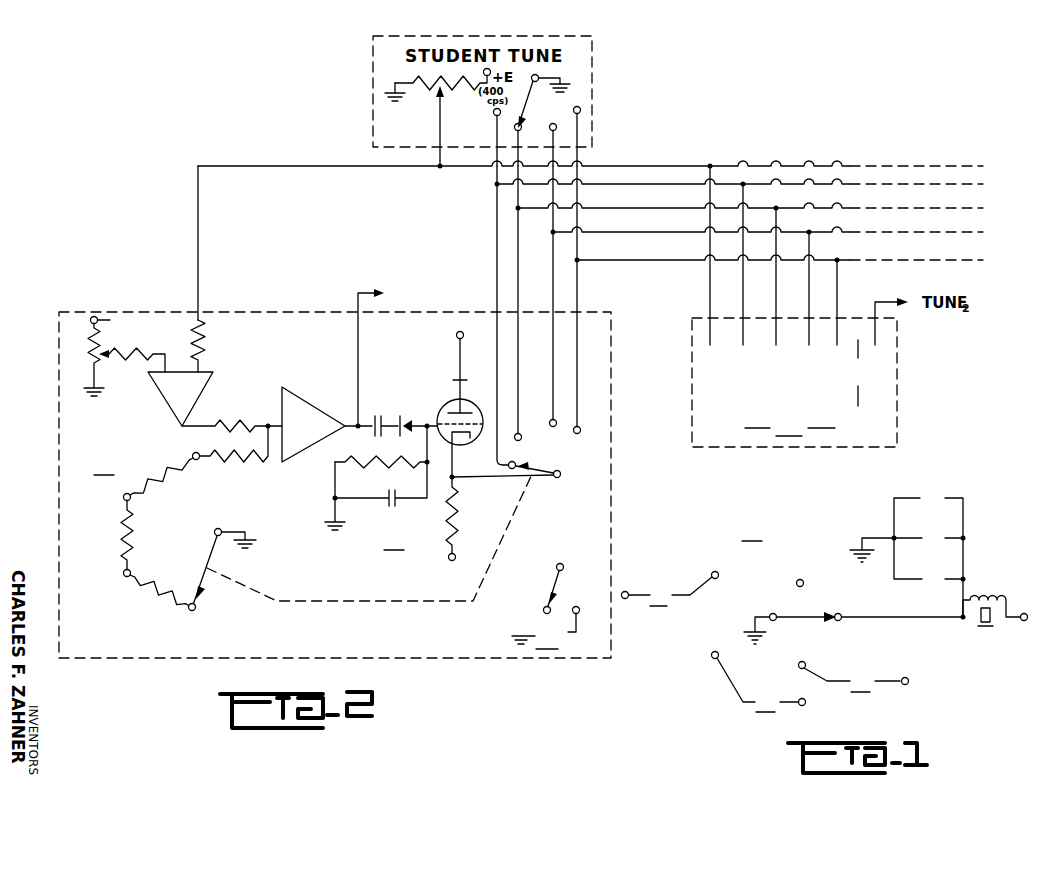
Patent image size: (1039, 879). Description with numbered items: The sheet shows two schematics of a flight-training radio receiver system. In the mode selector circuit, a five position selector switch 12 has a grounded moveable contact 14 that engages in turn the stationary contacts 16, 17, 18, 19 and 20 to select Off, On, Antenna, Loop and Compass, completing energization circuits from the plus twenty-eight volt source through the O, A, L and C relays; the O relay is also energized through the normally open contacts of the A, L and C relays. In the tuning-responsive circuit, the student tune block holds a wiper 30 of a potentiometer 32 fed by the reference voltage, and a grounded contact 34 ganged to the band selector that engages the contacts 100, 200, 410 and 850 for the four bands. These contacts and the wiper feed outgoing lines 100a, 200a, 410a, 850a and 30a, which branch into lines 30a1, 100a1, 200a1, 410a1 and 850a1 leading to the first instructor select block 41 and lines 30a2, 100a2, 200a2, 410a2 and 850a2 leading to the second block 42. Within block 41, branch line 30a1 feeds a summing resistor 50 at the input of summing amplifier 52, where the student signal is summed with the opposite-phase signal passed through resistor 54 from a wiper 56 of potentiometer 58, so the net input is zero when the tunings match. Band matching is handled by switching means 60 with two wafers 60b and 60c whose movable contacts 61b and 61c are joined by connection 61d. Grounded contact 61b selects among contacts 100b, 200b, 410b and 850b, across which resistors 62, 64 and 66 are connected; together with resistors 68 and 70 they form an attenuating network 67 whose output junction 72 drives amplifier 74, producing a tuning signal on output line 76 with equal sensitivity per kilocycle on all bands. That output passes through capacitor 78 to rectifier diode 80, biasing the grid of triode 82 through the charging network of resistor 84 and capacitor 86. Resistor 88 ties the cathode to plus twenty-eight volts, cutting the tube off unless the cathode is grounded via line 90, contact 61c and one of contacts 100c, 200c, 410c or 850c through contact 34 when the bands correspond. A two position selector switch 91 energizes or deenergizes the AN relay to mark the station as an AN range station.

In FIG. 1, the five position selector switch 12 is at (825, 608).
In FIG. 1, the moveable contact 14 is at (792, 606).
In FIG. 1, the stationary contact 16 is at (804, 584).
In FIG. 1, the stationary contact 17 is at (841, 621).
In FIG. 1, the stationary contact 18 is at (800, 671).
In FIG. 1, the stationary contact 19 is at (738, 648).
In FIG. 1, the stationary contact 20 is at (719, 575).
In FIG. 2, the wiper 30 is at (436, 96).
In FIG. 2, the potentiometer 32 is at (442, 78).
In FIG. 2, the moveable grounded contact 34 is at (530, 96).
In FIG. 2, the instructor select block 41 is at (59, 437).
In FIG. 2, the instructor select block 42 is at (898, 378).
In FIG. 2, the summing resistor 50 is at (205, 346).
In FIG. 2, the summing amplifier 52 is at (208, 386).
In FIG. 2, the resistor 54 is at (134, 348).
In FIG. 2, the wiper 56 is at (108, 361).
In FIG. 2, the potentiometer 58 is at (90, 342).
In FIG. 2, the switching means 60 is at (395, 541).
In FIG. 2, the wafer 60b is at (214, 520).
In FIG. 2, the wafer 60c is at (550, 460).
In FIG. 2, the movable contact 61b is at (213, 550).
In FIG. 2, the movable contact 61c is at (548, 482).
In FIG. 2, the connection 61d is at (334, 600).
In FIG. 2, the resistor 62 is at (145, 574).
In FIG. 2, the resistor 64 is at (134, 530).
In FIG. 2, the resistor 66 is at (170, 480).
In FIG. 2, the attenuating network 67 is at (106, 466).
In FIG. 2, the resistor 68 is at (226, 466).
In FIG. 2, the resistor 70 is at (242, 414).
In FIG. 2, the attenuator output junction 72 is at (270, 414).
In FIG. 2, the amplifier 74 is at (310, 388).
In FIG. 2, the output line 76 is at (358, 366).
In FIG. 2, the capacitor 78 is at (375, 415).
In FIG. 2, the rectifier diode 80 is at (408, 414).
In FIG. 2, the triode 82 is at (452, 399).
In FIG. 2, the resistor 84 is at (388, 455).
In FIG. 2, the capacitor 86 is at (394, 508).
In FIG. 2, the resistor 88 is at (458, 526).
In FIG. 2, the line 90 is at (489, 482).
In FIG. 2, the two position selector switch 91 is at (553, 584).
In FIG. 2, the contact 100 is at (493, 113).
In FIG. 2, the contact 200 is at (514, 128).
In FIG. 2, the contact 410 is at (550, 129).
In FIG. 2, the contact 850 is at (580, 110).
In FIG. 2, the outgoing line 30a is at (436, 157).
In FIG. 2, the outgoing line 100a is at (494, 158).
In FIG. 2, the outgoing line 200a is at (750, 179).
In FIG. 2, the outgoing line 410a is at (556, 146).
In FIG. 2, the outgoing line 850a is at (579, 160).
In FIG. 2, the branch line 30a1 is at (198, 270).
In FIG. 2, the branch line 100a1 is at (497, 249).
In FIG. 2, the branch line 200a1 is at (518, 228).
In FIG. 2, the branch line 410a1 is at (553, 280).
In FIG. 2, the branch line 850a1 is at (577, 294).
In FIG. 2, the branch line 30a2 is at (710, 312).
In FIG. 2, the branch line 100a2 is at (734, 298).
In FIG. 2, the branch line 200a2 is at (776, 306).
In FIG. 2, the branch line 410a2 is at (812, 294).
In FIG. 2, the branch line 850a2 is at (840, 268).
In FIG. 2, the stationary contact 100b is at (196, 609).
In FIG. 2, the stationary contact 200b is at (124, 578).
In FIG. 2, the stationary contact 410b is at (124, 496).
In FIG. 2, the stationary contact 850b is at (194, 454).
In FIG. 2, the stationary contact 100c is at (504, 454).
In FIG. 2, the stationary contact 200c is at (524, 425).
In FIG. 2, the stationary contact 410c is at (549, 428).
In FIG. 2, the stationary contact 850c is at (580, 430).